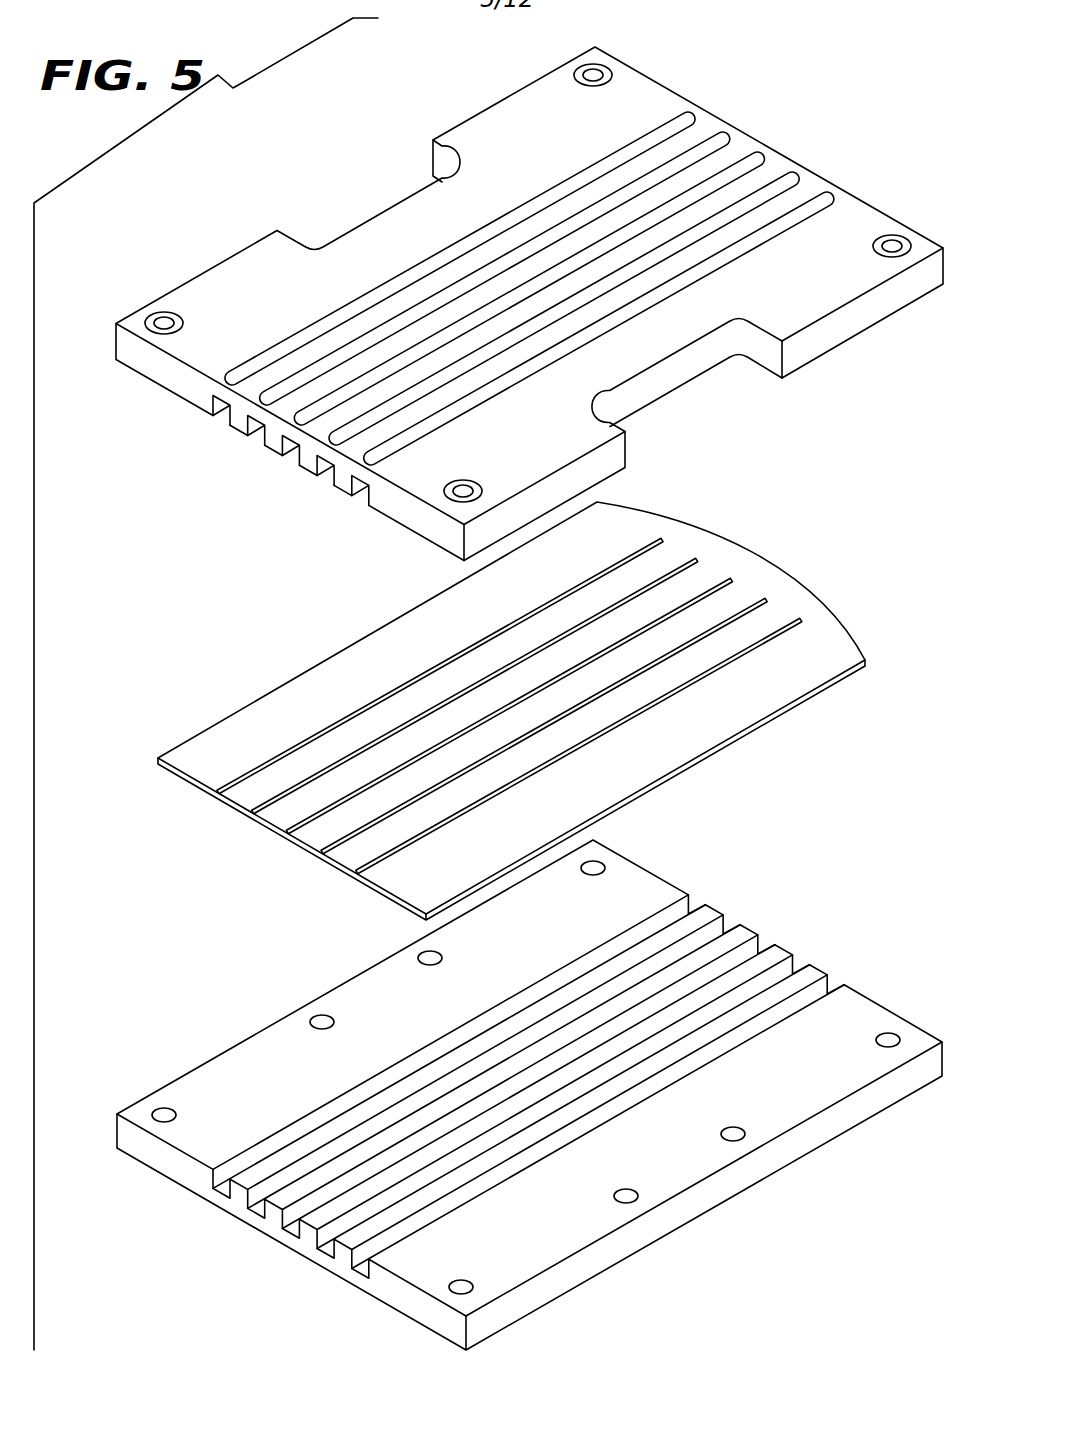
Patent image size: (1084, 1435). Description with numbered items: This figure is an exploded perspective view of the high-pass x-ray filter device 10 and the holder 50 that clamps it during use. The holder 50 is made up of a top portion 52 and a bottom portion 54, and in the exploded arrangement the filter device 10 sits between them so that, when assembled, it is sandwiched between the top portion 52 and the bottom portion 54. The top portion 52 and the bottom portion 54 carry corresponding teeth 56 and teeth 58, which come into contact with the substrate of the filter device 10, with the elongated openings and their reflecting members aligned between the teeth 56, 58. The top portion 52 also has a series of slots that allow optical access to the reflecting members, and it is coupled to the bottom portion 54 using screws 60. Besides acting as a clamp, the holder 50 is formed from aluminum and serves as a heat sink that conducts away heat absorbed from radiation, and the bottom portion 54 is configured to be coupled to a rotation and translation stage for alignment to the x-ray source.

The high-pass x-ray filter device 10 is at (200, 762).
The holder 50 is at (477, 124).
The top portion 52 is at (527, 92).
The bottom portion 54 is at (710, 1193).
The teeth 56 is at (342, 482).
The teeth 58 is at (345, 1253).
The screws 60 is at (593, 73).